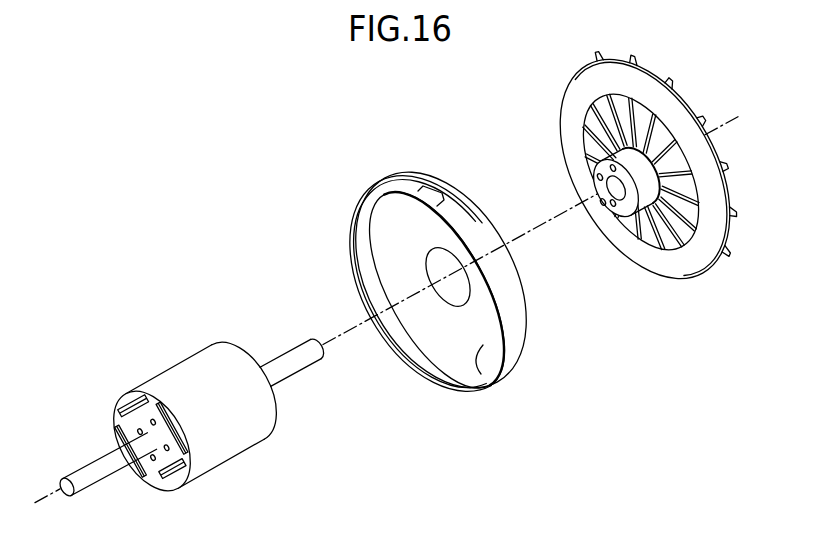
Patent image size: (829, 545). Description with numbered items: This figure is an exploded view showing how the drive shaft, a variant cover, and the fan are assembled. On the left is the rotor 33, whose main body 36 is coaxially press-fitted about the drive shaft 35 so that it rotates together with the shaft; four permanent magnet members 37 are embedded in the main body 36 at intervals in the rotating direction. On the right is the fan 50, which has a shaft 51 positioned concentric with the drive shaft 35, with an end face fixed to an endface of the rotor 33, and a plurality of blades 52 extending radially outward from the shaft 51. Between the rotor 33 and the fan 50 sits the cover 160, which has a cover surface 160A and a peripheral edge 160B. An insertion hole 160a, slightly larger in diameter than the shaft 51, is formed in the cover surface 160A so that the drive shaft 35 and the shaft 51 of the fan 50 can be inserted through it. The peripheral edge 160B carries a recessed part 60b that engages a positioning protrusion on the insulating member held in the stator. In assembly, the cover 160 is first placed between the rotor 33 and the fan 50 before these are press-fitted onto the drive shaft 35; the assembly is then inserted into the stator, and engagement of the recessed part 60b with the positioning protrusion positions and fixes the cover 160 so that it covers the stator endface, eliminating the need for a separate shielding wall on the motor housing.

The rotor 33 is at (200, 367).
The drive shaft 35 is at (105, 470).
The main body 36 is at (228, 445).
The permanent magnet members 37 is at (128, 407).
The fan 50 is at (712, 188).
The shaft 51 is at (642, 226).
The blades 52 is at (697, 260).
The recessed part 60b is at (374, 194).
The cover 160 is at (513, 338).
The insertion hole 160a is at (443, 268).
The cover surface 160A is at (497, 373).
The peripheral edge 160B is at (428, 360).